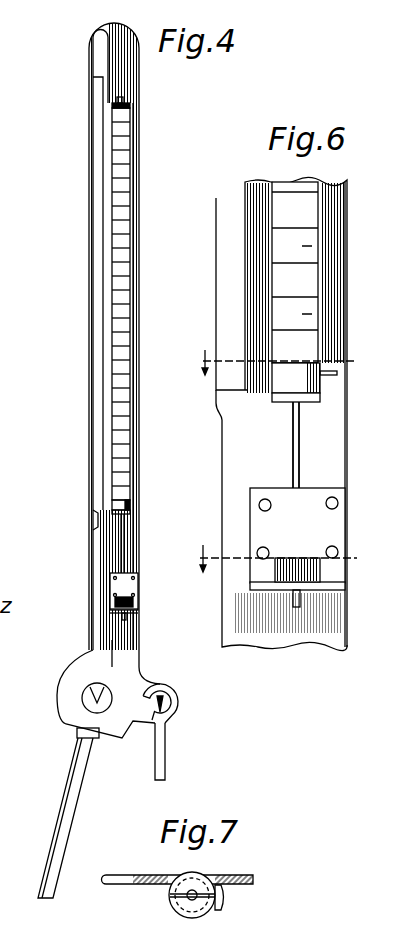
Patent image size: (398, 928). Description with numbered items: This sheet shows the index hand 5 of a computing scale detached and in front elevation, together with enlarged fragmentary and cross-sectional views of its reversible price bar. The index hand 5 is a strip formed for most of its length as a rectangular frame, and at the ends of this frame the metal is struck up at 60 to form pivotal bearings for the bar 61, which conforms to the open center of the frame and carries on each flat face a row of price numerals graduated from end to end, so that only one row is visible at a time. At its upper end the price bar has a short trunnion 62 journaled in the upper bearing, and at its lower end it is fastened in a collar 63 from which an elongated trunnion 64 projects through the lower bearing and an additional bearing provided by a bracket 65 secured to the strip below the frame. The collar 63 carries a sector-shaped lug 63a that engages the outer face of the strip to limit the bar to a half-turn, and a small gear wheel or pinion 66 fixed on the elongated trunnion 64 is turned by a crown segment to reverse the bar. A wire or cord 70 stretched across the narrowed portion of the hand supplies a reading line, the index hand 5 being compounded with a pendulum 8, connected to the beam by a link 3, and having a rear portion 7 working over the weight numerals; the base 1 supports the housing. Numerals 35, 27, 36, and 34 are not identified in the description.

In FIG. 4, the wire or cord 70 is at (92, 388).
In FIG. 4, the bar 61 is at (129, 462).
In FIG. 6, the bar 61 is at (318, 290).
In FIG. 7, the bar 61 is at (170, 894).
In FIG. 4, the short trunnion 62 is at (124, 100).
In FIG. 4, the pivotal bearings 60 is at (127, 105).
In FIG. 6, the pivotal bearings 60 is at (307, 401).
In FIG. 4, the collar 63 is at (131, 503).
In FIG. 6, the collar 63 is at (280, 378).
In FIG. 7, the collar 63 is at (200, 873).
In FIG. 7, the sector-shaped lug 63a is at (226, 898).
In FIG. 4, the elongated trunnion 64 is at (121, 530).
In FIG. 6, the elongated trunnion 64 is at (300, 471).
In FIG. 4, the bracket 65 is at (139, 611).
In FIG. 6, the bracket 65 is at (273, 592).
In FIG. 4, the gear wheel or pinion 66 is at (114, 602).
In FIG. 6, the gear wheel or pinion 66 is at (280, 568).
In FIG. 4, the index hand 5 is at (141, 674).
In FIG. 6, the index hand 5 is at (347, 222).
In FIG. 7, the index hand 5 is at (254, 878).
In FIG. 4, the link 3 is at (166, 764).
In FIG. 4, the pendulum 8 is at (79, 801).
In FIG. 6, the pendulum 8 is at (276, 559).
In FIG. 6, the rear portion 7 is at (279, 361).
In FIG. 4, the element 35 is at (0, 652).
In FIG. 4, the element 27 is at (0, 692).
In FIG. 4, the element 36 is at (0, 751).
In FIG. 4, the base 1 is at (7, 774).
In FIG. 4, the element 34 is at (0, 801).